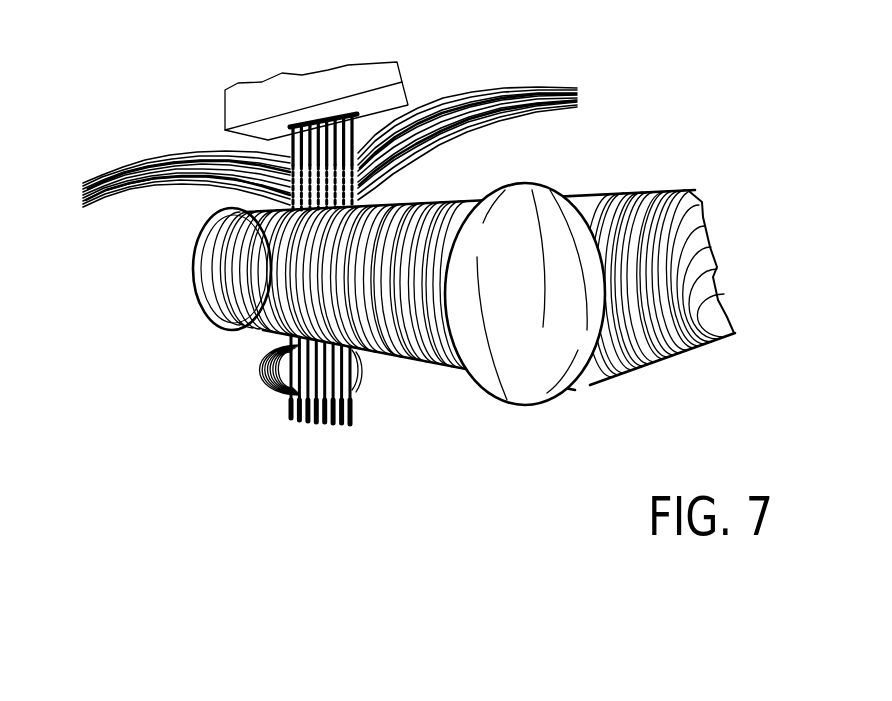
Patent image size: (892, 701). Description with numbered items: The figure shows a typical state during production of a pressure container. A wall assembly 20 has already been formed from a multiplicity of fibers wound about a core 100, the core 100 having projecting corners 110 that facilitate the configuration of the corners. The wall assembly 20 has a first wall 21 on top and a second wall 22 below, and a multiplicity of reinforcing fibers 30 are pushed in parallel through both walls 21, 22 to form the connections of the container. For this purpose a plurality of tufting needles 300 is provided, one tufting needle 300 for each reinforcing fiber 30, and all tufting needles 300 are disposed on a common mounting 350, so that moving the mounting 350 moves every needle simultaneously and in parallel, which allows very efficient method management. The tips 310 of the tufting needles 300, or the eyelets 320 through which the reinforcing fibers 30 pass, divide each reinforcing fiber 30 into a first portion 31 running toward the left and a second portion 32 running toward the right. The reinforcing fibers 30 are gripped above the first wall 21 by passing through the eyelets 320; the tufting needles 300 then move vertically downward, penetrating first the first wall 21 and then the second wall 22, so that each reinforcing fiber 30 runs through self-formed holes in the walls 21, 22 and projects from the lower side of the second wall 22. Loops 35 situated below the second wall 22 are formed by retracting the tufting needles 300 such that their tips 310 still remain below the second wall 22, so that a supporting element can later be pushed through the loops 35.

The wall assembly 20 is at (464, 274).
The first wall 21 is at (448, 197).
The second wall 22 is at (393, 367).
The reinforcing fiber 30 is at (110, 198).
The first portion 31 is at (130, 168).
The second portion 32 is at (517, 87).
The loop 35 is at (260, 383).
The core 100 is at (522, 337).
The projecting corner 110 is at (487, 382).
The tufting needle 300 is at (357, 112).
The tip 310 is at (337, 423).
The eyelet 320 is at (357, 400).
The mounting 350 is at (282, 95).